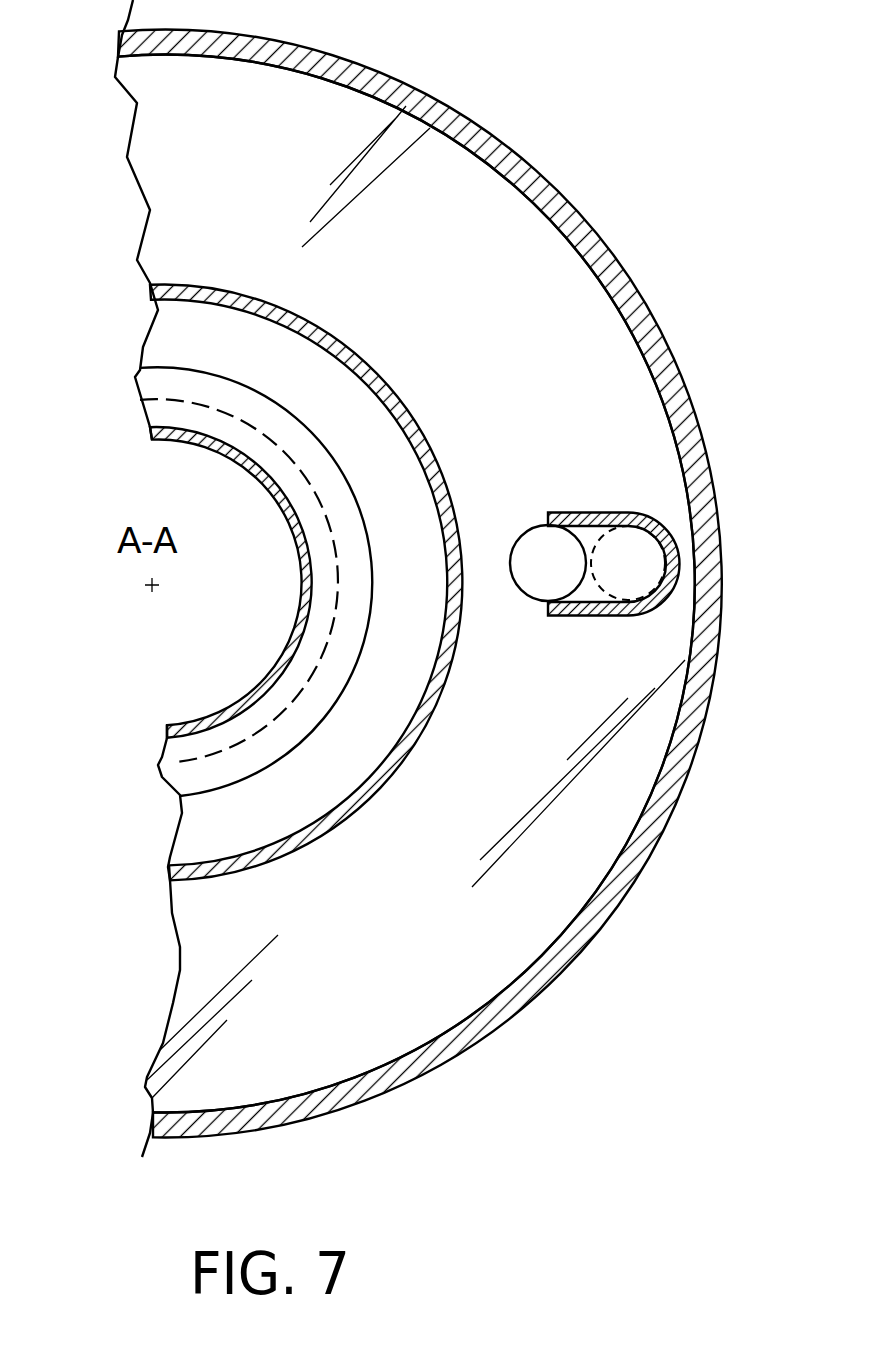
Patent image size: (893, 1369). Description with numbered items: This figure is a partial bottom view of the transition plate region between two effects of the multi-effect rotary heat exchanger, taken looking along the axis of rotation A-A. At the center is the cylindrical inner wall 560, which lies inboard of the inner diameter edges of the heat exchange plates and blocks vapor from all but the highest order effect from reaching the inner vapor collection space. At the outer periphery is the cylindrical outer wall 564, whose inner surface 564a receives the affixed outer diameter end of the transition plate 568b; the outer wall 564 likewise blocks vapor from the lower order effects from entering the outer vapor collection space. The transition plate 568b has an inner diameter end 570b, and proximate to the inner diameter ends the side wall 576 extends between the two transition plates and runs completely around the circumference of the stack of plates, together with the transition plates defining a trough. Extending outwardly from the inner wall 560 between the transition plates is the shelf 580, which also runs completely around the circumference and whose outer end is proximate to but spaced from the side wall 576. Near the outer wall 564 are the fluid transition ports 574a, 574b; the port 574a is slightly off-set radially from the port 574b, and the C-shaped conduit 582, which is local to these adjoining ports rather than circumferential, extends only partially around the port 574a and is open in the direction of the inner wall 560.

The inner wall 560 is at (162, 440).
The outer wall 564 is at (577, 207).
The inner surface 564a is at (517, 193).
The transition plate 568b is at (293, 141).
The inner diameter end 570b is at (167, 762).
The fluid transition port 574a is at (598, 615).
The fluid transition port 574b is at (522, 592).
The side wall 576 is at (162, 280).
The shelf 580 is at (149, 362).
The C-shaped conduit 582 is at (637, 512).